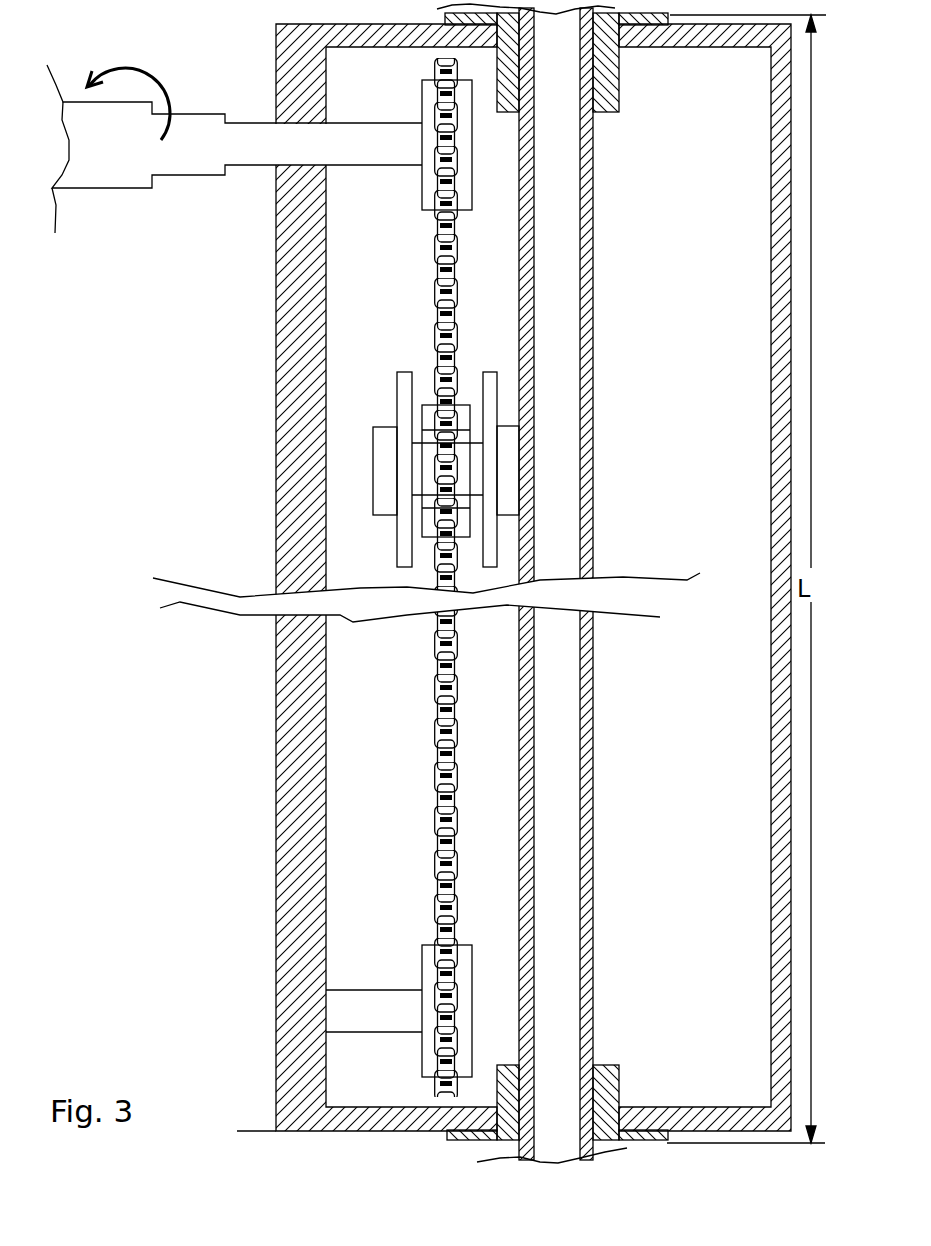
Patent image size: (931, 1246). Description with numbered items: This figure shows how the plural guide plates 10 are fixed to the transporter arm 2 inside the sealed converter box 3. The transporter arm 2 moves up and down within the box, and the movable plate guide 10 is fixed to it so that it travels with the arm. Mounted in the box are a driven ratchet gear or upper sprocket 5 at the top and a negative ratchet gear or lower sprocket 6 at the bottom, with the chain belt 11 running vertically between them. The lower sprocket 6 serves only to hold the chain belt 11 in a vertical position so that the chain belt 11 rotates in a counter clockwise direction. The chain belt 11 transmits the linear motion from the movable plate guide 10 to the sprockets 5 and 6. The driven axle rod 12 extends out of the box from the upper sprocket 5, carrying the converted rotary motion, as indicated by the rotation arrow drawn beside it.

The transporter arm 2 is at (595, 455).
The sealed converter box 3 is at (276, 713).
The upper sprocket 5 is at (467, 137).
The lower sprocket 6 is at (465, 1000).
The guide plates 10 is at (483, 373).
The chain belt 11 is at (462, 810).
The driven axle rod 12 is at (200, 168).